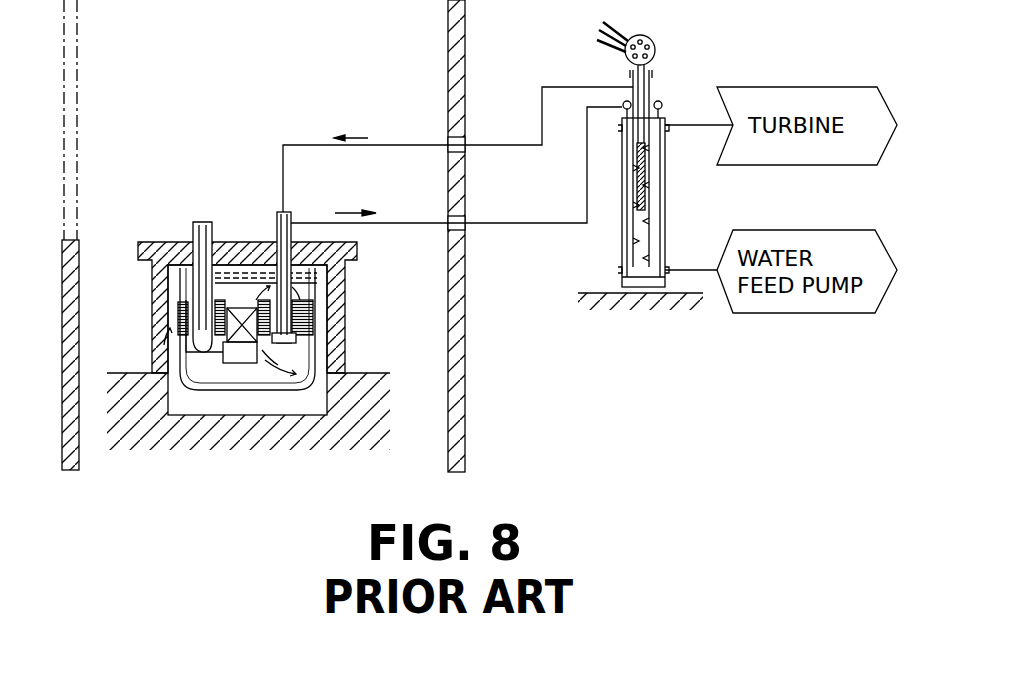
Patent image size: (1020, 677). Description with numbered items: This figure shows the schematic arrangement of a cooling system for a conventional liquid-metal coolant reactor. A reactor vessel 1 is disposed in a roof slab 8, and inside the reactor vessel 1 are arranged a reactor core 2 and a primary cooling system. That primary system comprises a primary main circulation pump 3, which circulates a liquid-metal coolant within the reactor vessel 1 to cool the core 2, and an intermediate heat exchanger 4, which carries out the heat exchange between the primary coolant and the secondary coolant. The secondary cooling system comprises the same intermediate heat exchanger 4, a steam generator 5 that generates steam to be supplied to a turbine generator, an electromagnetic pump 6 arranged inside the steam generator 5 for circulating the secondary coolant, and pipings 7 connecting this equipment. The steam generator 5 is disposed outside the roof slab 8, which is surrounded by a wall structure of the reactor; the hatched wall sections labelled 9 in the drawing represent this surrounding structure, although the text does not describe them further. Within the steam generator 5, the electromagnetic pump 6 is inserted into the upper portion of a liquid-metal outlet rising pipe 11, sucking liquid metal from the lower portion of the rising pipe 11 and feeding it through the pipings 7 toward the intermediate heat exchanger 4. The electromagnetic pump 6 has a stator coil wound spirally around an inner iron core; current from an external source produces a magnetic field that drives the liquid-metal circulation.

The reactor vessel 1 is at (343, 338).
The reactor core 2 is at (245, 300).
The primary main circulation pump 3 is at (208, 222).
The intermediate heat exchanger 4 is at (276, 228).
The steam generator 5 is at (622, 241).
The electromagnetic pump 6 is at (645, 163).
The pipings 7 is at (540, 110).
The roof slab 8 is at (162, 250).
The shielding wall 9 is at (80, 443).
The liquid-metal outlet rising pipe 11 is at (665, 235).